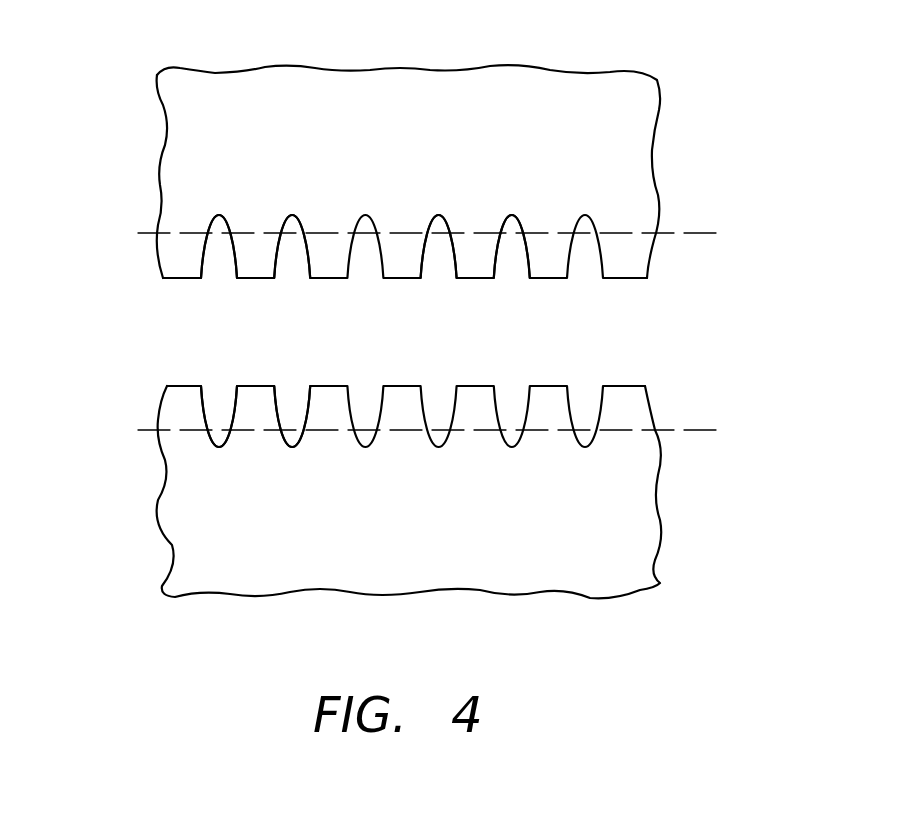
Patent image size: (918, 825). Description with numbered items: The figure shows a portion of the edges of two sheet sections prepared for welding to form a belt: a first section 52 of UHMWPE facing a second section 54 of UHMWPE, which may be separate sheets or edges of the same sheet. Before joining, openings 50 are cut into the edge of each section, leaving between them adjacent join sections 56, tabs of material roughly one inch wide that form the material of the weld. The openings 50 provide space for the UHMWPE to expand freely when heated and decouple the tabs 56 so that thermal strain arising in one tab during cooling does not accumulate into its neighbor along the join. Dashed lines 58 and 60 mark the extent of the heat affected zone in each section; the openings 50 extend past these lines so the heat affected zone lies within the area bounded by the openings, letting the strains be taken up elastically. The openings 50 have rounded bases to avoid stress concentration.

The openings 50 is at (300, 266).
The first section 52 is at (154, 76).
The second section 54 is at (156, 590).
The join sections 56 is at (473, 262).
The line 58 is at (693, 232).
The line 60 is at (702, 430).